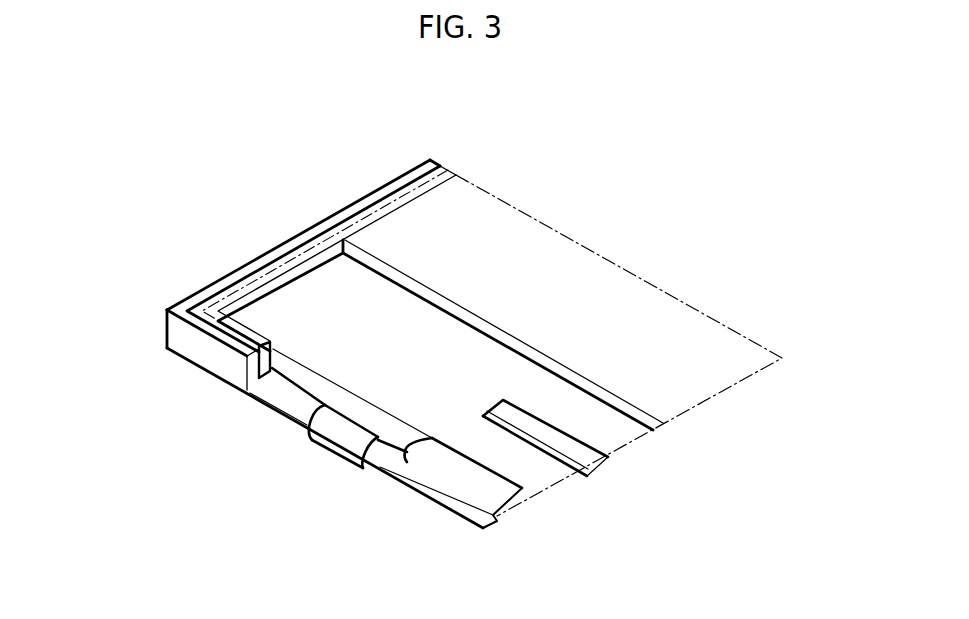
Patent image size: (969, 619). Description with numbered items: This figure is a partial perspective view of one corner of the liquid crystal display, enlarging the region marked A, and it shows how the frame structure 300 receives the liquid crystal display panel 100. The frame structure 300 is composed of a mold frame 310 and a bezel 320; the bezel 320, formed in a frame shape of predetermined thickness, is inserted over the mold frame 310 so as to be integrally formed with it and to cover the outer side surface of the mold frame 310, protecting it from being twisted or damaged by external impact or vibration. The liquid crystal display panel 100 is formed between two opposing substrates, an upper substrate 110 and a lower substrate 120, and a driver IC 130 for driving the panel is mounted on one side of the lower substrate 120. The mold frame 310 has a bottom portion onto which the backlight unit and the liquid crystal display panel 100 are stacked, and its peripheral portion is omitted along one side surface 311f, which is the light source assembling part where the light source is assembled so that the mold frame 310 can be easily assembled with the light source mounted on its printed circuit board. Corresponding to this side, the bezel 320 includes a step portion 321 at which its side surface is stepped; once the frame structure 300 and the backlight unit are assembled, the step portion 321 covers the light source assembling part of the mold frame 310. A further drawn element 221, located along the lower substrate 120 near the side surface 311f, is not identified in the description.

The liquid crystal display panel 100 is at (486, 369).
The upper substrate 110 is at (690, 377).
The lower substrate 120 is at (537, 471).
The driver IC 130 is at (553, 434).
The connector sleeve 221 is at (338, 437).
The frame structure 300 is at (292, 282).
The mold frame 310 is at (320, 243).
The one side surface 311f is at (280, 380).
The bezel 320 is at (383, 187).
The step portion 321 is at (247, 375).